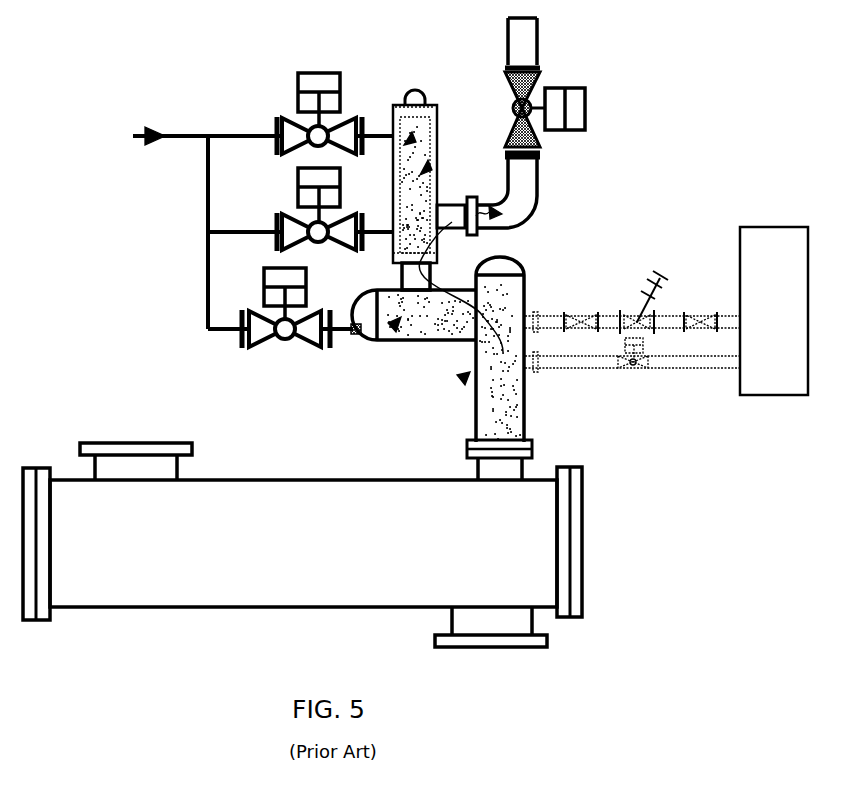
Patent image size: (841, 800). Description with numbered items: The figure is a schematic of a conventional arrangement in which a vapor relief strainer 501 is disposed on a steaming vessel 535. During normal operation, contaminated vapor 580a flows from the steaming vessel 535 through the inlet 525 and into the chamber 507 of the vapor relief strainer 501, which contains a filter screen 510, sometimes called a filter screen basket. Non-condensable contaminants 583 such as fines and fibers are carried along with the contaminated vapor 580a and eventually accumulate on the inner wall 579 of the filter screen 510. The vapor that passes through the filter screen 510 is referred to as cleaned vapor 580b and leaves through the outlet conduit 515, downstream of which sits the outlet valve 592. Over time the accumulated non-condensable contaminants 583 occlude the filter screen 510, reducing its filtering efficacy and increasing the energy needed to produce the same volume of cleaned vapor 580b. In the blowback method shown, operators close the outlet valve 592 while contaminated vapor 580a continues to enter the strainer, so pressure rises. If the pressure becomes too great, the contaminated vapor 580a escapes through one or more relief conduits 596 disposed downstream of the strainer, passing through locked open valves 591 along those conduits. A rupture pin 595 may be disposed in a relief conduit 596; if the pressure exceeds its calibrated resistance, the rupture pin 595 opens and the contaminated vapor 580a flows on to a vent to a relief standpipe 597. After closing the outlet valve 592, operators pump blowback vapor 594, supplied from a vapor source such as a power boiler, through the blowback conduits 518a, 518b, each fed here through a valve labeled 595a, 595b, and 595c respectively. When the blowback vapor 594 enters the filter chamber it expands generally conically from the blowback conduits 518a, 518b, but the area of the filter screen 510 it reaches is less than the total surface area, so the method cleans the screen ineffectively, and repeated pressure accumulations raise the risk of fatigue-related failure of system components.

The vapor relief strainer 501 is at (403, 80).
The chamber 507 is at (436, 118).
The filter screen 510 is at (397, 128).
The outlet conduit 515 is at (452, 222).
The blowback conduit 518a is at (378, 140).
The blowback conduit 518b is at (378, 236).
The inlet 525 is at (430, 263).
The steaming vessel 535 is at (237, 550).
The inner wall 579 is at (412, 138).
The contaminated vapor 580a is at (503, 352).
The cleaned vapor 580b is at (447, 212).
The non-condensable contaminants 583 is at (425, 168).
The locked open valve 591 is at (592, 318).
The outlet valve 592 is at (515, 120).
The blowback vapor 594 is at (183, 132).
The rupture pin 595 is at (645, 282).
The control valve 595a is at (293, 124).
The control valve 595b is at (295, 222).
The control valve 595c is at (282, 340).
The relief conduit 596 is at (530, 318).
The relief standpipe 597 is at (791, 282).